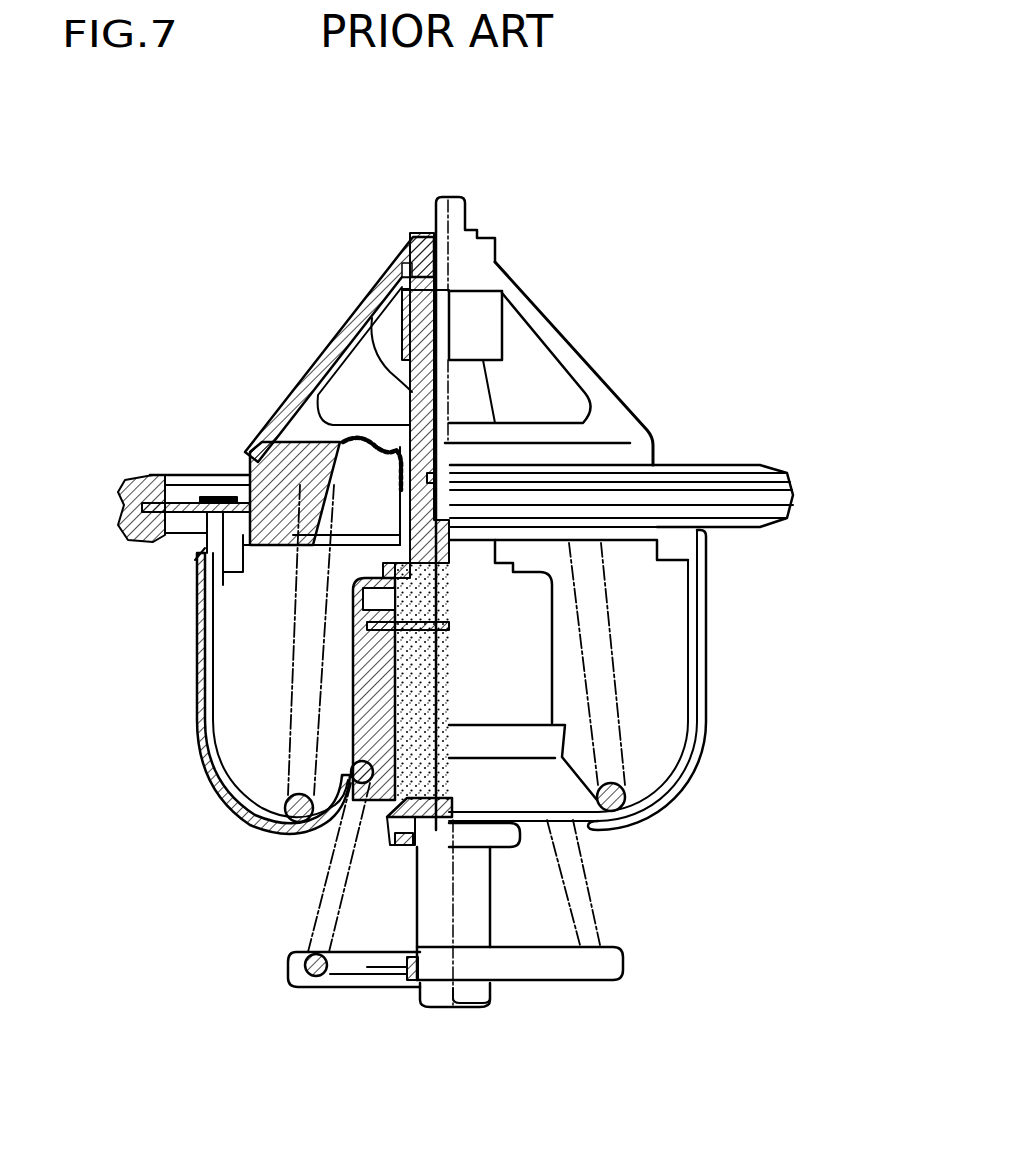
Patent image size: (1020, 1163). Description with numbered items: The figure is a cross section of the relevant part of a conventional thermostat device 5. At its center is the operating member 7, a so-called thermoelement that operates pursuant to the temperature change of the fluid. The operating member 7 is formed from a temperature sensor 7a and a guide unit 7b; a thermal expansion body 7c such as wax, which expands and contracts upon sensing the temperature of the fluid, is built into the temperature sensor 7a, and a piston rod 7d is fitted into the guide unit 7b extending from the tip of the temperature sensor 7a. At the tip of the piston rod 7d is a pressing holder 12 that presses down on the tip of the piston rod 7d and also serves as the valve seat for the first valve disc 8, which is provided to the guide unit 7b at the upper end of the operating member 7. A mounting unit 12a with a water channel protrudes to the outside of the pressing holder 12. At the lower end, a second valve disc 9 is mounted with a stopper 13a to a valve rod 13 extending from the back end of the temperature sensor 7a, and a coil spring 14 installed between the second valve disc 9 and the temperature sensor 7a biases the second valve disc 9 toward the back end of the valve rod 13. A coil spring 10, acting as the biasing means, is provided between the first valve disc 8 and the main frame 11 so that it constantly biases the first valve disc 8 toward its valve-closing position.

The thermostat device 5 is at (253, 384).
The operating member 7 is at (570, 652).
The temperature sensor 7a is at (348, 785).
The guide unit 7b is at (410, 283).
The thermal expansion body 7c is at (380, 812).
The piston rod 7d is at (433, 395).
The first valve disc 8 is at (312, 445).
The second valve disc 9 is at (367, 987).
The coil spring 10 is at (307, 677).
The main frame 11 is at (197, 660).
The pressing holder 12 is at (537, 314).
The mounting unit 12a is at (182, 504).
The valve rod 13 is at (470, 902).
The stopper 13a is at (420, 1003).
The coil spring 14 is at (372, 812).